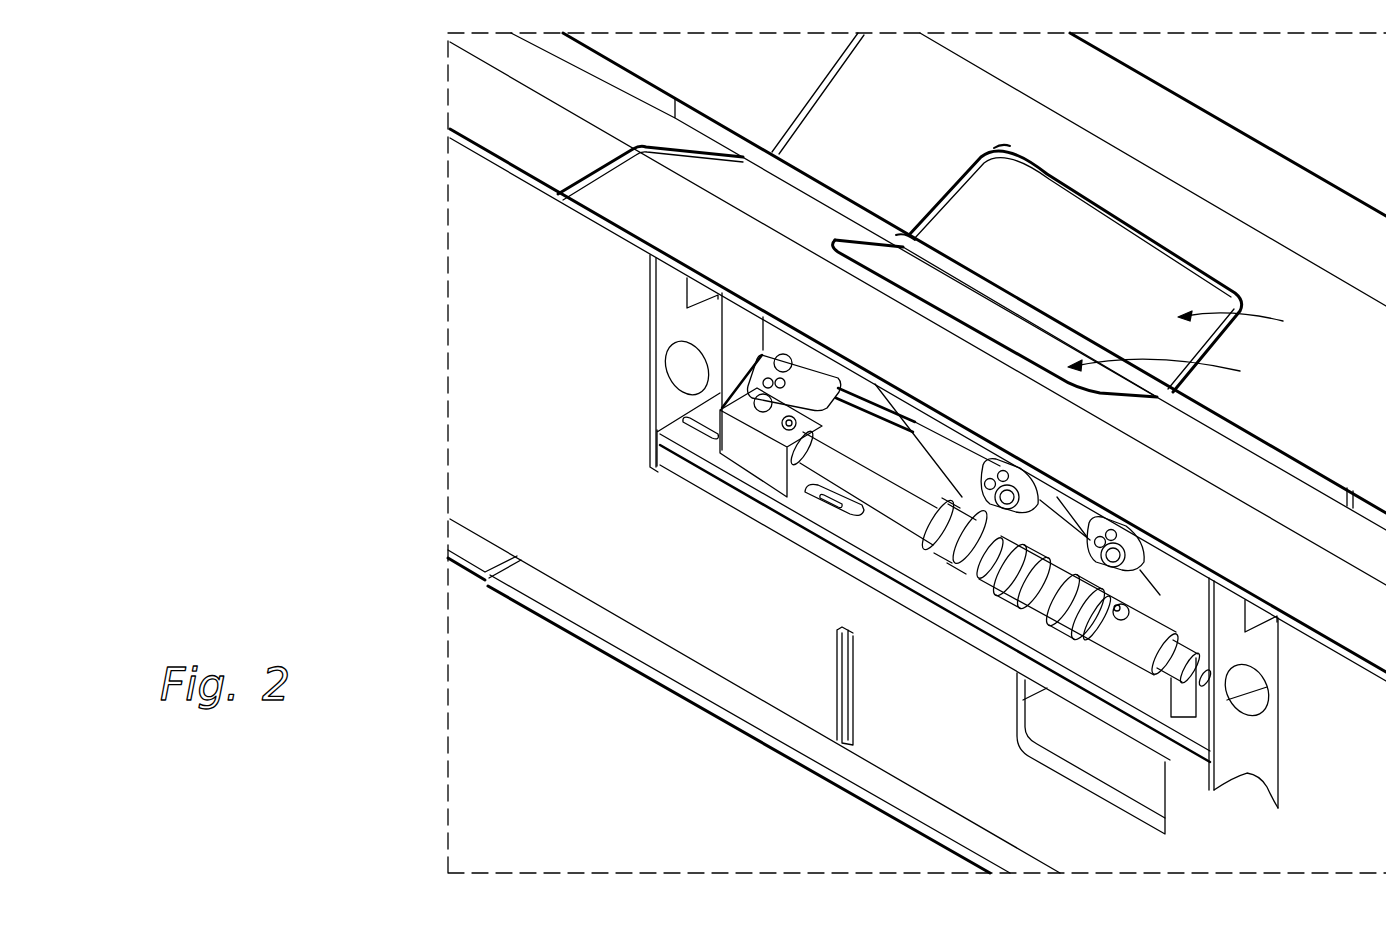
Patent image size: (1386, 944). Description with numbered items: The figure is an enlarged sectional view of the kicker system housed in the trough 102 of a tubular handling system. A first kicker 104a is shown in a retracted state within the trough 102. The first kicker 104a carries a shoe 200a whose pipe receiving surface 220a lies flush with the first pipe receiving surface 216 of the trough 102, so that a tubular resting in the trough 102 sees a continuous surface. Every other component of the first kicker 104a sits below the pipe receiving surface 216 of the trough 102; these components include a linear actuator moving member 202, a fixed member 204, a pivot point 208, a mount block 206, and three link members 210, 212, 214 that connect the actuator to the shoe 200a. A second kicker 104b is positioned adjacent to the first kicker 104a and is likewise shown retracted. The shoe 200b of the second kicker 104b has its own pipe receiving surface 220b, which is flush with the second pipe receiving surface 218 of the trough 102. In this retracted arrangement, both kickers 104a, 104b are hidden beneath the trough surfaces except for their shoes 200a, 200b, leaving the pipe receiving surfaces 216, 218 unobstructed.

The trough 102 is at (691, 703).
The first kicker 104a is at (1180, 374).
The second kicker 104b is at (1255, 324).
The shoe 200a is at (912, 304).
The shoe 200b is at (1113, 193).
The linear actuator moving member 202 is at (1035, 578).
The fixed member 204 is at (907, 500).
The mount block 206 is at (1180, 703).
The pivot point 208 is at (745, 392).
The link member 210 is at (1088, 518).
The link member 212 is at (965, 450).
The link member 214 is at (853, 387).
The first pipe receiving surface 216 is at (801, 221).
The second pipe receiving surface 218 is at (893, 113).
The pipe receiving surface 220a is at (900, 268).
The pipe receiving surface 220b is at (988, 192).